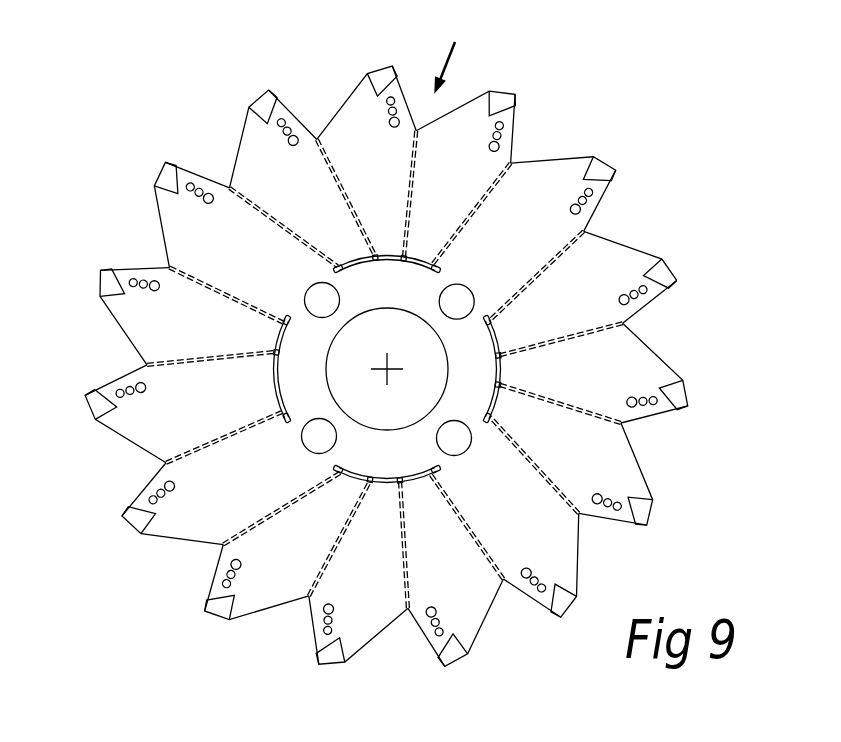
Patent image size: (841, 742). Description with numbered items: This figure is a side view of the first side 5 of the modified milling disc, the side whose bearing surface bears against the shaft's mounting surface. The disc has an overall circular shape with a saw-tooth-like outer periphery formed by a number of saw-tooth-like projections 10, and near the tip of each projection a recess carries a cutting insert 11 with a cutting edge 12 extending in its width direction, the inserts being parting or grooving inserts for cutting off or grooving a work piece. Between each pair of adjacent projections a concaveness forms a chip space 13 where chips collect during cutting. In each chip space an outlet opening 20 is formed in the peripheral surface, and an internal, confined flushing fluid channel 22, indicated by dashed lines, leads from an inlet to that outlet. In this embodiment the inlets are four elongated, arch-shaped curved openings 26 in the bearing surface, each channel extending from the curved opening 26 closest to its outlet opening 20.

The first side 5 is at (160, 418).
The saw-tooth-like projection 10 is at (560, 172).
The cutting insert 11 is at (650, 273).
The cutting edge 12 is at (672, 275).
The chip space 13 is at (459, 54).
The outlet opening 20 is at (167, 265).
The flushing fluid channel 22 is at (170, 267).
The curved opening 26 is at (283, 333).